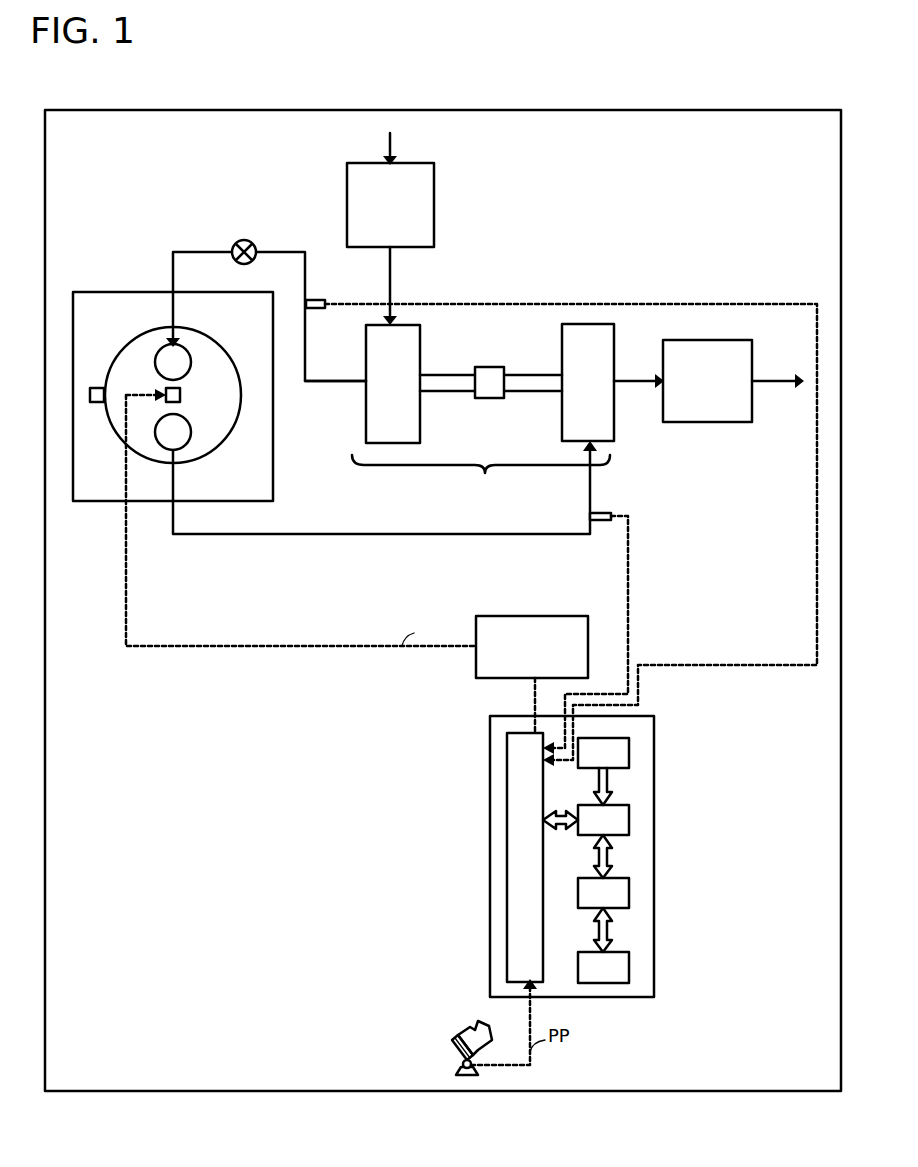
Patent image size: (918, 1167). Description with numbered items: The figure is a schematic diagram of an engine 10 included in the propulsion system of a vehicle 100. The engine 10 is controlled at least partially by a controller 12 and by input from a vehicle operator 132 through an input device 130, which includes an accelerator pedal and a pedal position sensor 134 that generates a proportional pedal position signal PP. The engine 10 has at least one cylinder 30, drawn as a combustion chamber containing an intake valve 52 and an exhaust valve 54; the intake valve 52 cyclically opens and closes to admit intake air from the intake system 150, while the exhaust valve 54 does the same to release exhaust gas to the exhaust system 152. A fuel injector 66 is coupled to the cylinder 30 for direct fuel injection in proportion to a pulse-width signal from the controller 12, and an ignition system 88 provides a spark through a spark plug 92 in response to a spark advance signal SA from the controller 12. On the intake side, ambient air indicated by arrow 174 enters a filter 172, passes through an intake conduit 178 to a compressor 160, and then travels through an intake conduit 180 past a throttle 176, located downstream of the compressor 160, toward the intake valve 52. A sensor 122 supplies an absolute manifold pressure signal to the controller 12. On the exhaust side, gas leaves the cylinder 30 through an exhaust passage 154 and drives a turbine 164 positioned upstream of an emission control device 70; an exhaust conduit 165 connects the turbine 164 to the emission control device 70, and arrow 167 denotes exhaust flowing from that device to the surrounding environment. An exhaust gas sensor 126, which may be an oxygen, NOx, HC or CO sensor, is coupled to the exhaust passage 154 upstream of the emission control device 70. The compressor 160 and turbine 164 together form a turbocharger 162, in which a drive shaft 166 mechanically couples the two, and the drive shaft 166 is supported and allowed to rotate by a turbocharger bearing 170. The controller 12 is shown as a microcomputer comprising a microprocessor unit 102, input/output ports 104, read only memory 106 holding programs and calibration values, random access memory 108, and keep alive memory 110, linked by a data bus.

The vehicle 100 is at (62, 110).
The engine 10 is at (84, 292).
The cylinder 30 is at (138, 335).
The intake valve 52 is at (191, 354).
The exhaust valve 54 is at (191, 440).
The spark plug 92 is at (181, 395).
The fuel injector 66 is at (97, 388).
The throttle 176 is at (240, 240).
The ambient air flow 174 is at (392, 140).
The filter 172 is at (390, 205).
The intake conduit 178 is at (390, 265).
The sensor 122 is at (312, 300).
The intake system 150 is at (466, 295).
The intake conduit 180 is at (355, 381).
The compressor 160 is at (393, 384).
The drive shaft 166 is at (425, 372).
The turbocharger bearing 170 is at (490, 398).
The turbine 164 is at (588, 382).
The exhaust conduit 165 is at (630, 380).
The emission control device 70 is at (707, 381).
The exhaust gas flow 167 is at (760, 380).
The turbocharger 162 is at (481, 475).
The exhaust passage 154 is at (318, 534).
The exhaust system 152 is at (442, 553).
The exhaust gas sensor 126 is at (600, 513).
The ignition system 88 is at (553, 616).
The controller 12 is at (645, 716).
The input/output ports 104 is at (507, 738).
The read only memory 106 is at (629, 752).
The microprocessor unit 102 is at (629, 818).
The random access memory 108 is at (629, 890).
The keep alive memory 110 is at (629, 964).
The input device 130 is at (456, 1046).
The vehicle operator 132 is at (486, 1038).
The pedal position sensor 134 is at (455, 1064).